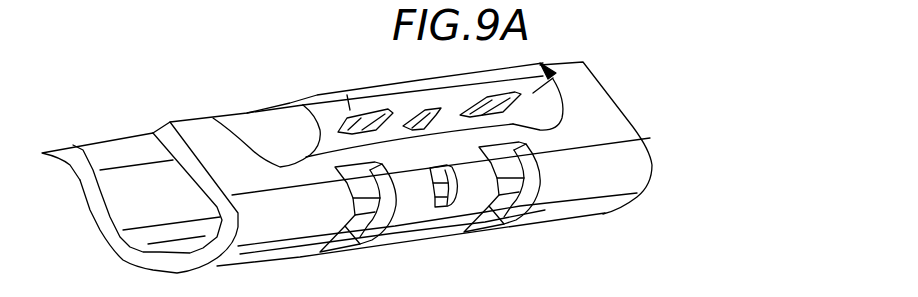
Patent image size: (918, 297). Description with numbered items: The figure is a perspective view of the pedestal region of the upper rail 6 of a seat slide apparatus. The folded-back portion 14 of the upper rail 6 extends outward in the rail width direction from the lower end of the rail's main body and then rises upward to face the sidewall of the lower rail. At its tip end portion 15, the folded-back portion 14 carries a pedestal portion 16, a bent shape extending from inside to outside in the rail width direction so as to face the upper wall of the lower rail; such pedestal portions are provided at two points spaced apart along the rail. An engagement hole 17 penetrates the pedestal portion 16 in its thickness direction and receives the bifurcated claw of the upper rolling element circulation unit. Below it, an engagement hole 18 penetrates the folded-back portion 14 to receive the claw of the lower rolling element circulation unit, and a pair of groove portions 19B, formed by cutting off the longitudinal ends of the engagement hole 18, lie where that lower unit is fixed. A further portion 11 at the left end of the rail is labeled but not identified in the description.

The upper rail 6 is at (557, 226).
The hook tip 11 is at (93, 210).
The folded-back portion 14 is at (218, 208).
The tip end portion 15 is at (563, 63).
The pedestal portion 16 is at (317, 95).
The engagement hole 17 is at (413, 103).
The engagement hole 18 is at (443, 208).
The groove portion 19B is at (355, 230).